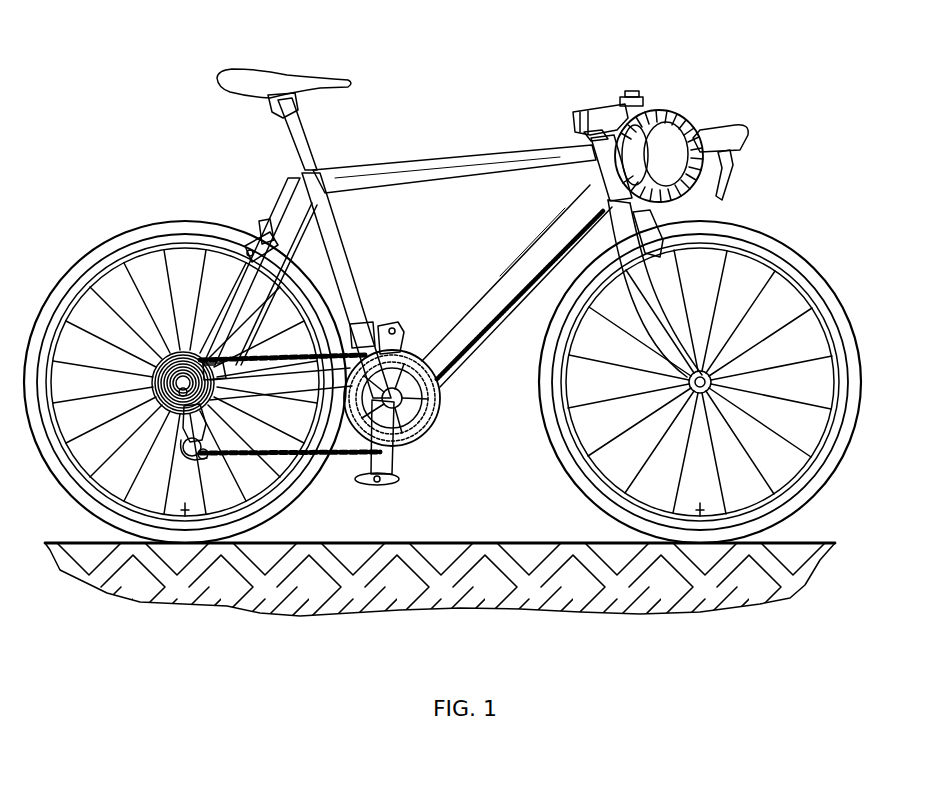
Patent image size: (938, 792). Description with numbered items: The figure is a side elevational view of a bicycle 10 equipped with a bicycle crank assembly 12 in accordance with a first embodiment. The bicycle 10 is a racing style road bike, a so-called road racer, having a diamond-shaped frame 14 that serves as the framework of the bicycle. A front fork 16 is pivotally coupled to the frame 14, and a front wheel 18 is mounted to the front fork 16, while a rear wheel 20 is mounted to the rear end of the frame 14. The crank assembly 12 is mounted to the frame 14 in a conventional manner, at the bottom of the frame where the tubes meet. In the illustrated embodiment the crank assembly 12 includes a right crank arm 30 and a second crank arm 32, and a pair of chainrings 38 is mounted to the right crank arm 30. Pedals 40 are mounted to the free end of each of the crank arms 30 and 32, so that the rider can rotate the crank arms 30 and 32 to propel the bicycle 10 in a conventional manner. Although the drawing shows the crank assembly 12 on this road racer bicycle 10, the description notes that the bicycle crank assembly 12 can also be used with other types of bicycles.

The bicycle 10 is at (728, 69).
The bicycle crank assembly 12 is at (404, 461).
The frame 14 is at (442, 157).
The front fork 16 is at (670, 318).
The front wheel 18 is at (766, 245).
The rear wheel 20 is at (97, 256).
The right crank arm 30 is at (372, 464).
The crank arm 32 is at (412, 338).
The chainrings 38 is at (436, 428).
The pedals 40 is at (386, 323).